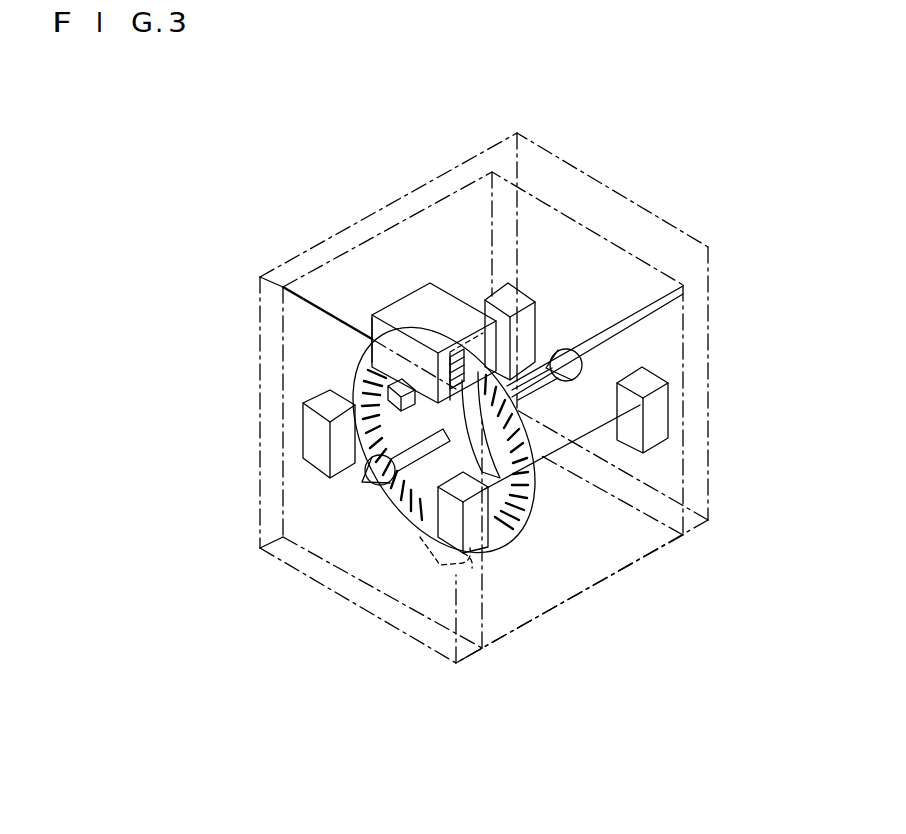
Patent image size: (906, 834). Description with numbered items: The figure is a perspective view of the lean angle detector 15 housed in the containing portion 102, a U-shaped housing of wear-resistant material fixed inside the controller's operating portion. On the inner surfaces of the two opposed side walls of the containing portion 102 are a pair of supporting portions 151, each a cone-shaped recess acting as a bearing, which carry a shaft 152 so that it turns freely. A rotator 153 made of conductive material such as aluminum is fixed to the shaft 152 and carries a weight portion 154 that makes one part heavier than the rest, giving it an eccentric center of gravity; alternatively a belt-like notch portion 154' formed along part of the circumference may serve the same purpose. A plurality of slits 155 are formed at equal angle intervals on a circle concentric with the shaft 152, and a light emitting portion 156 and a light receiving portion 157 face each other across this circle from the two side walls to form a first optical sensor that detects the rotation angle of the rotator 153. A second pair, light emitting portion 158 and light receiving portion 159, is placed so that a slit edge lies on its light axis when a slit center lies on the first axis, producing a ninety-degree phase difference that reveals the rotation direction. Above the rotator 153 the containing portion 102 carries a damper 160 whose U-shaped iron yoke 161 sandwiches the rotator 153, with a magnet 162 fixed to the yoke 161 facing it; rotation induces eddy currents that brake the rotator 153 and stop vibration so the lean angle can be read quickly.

The lean angle detector 15 is at (767, 89).
The containing portion 102 is at (693, 478).
The supporting portion 151 is at (370, 488).
The shaft 152 is at (428, 462).
The rotator 153 is at (540, 470).
The weight portion 154 is at (424, 564).
The belt-like notch portion 154' is at (512, 566).
The slits 155 is at (548, 533).
The light emitting portion 156 is at (657, 410).
The light receiving portion 157 is at (438, 528).
The light emitting portion 158 is at (520, 300).
The light receiving portion 159 is at (321, 402).
The damper 160 is at (437, 307).
The yoke 161 is at (370, 338).
The magnet 162 is at (450, 356).